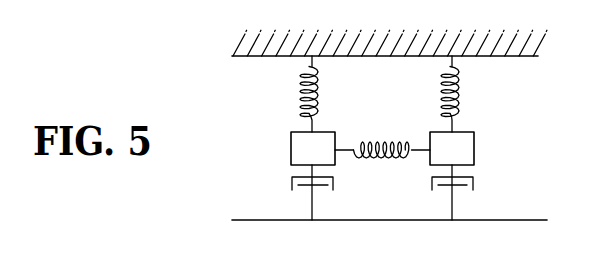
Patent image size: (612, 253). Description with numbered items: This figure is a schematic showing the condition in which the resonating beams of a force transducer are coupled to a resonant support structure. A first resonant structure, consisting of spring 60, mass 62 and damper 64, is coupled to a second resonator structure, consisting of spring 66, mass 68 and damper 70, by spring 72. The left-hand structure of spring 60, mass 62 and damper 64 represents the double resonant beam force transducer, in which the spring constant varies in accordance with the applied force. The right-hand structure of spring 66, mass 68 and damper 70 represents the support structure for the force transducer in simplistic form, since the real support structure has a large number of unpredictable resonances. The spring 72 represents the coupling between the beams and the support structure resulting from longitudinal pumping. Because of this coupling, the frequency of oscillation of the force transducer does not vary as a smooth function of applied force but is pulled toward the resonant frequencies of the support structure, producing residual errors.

The spring 60 is at (316, 94).
The mass 62 is at (291, 152).
The damper 64 is at (292, 181).
The spring 66 is at (458, 94).
The mass 68 is at (474, 152).
The damper 70 is at (474, 184).
The spring 72 is at (388, 159).